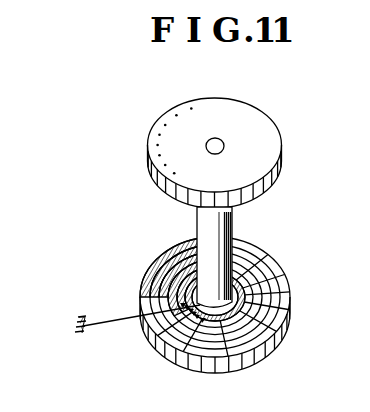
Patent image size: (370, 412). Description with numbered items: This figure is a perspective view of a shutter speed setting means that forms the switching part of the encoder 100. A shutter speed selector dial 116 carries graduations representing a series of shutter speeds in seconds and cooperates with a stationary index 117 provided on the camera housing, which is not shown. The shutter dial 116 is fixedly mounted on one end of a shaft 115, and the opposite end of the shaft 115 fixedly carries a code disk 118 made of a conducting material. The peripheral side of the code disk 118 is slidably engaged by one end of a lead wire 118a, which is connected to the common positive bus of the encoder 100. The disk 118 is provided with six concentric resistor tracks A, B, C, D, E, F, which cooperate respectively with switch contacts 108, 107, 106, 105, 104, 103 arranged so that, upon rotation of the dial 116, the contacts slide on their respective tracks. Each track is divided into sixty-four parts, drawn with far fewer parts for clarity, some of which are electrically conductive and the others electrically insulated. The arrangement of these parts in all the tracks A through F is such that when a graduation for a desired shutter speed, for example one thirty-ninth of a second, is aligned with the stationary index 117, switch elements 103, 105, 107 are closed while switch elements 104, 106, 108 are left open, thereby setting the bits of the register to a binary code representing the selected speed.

The encoder 100 is at (145, 254).
The switch element 103 is at (205, 320).
The switch element 104 is at (199, 317).
The switch element 105 is at (196, 314).
The switch element 106 is at (192, 311).
The switch element 107 is at (188, 308).
The switch element 108 is at (184, 305).
The shaft 115 is at (205, 147).
The shutter speed selector dial 116 is at (273, 148).
The stationary index 117 is at (147, 145).
The code disk 118 is at (234, 365).
The lead wire 118a is at (109, 322).
The resistor track A is at (283, 308).
The resistor track B is at (271, 302).
The resistor track C is at (257, 293).
The resistor track D is at (257, 287).
The resistor track E is at (254, 277).
The resistor track F is at (248, 271).